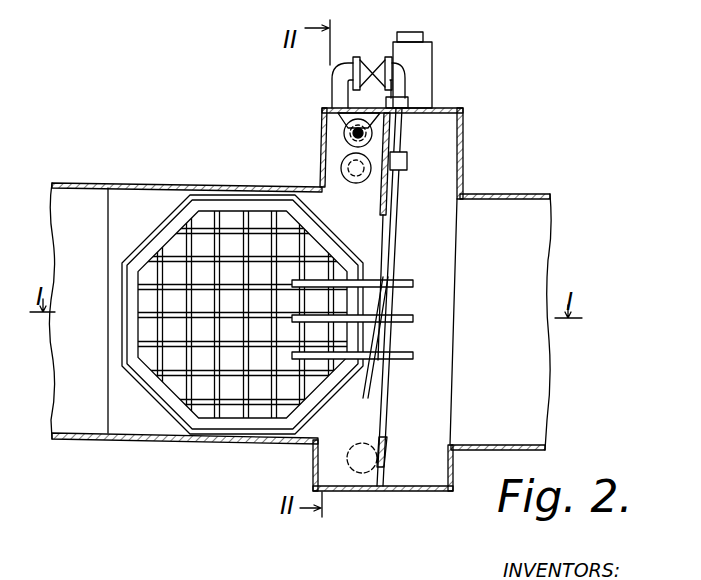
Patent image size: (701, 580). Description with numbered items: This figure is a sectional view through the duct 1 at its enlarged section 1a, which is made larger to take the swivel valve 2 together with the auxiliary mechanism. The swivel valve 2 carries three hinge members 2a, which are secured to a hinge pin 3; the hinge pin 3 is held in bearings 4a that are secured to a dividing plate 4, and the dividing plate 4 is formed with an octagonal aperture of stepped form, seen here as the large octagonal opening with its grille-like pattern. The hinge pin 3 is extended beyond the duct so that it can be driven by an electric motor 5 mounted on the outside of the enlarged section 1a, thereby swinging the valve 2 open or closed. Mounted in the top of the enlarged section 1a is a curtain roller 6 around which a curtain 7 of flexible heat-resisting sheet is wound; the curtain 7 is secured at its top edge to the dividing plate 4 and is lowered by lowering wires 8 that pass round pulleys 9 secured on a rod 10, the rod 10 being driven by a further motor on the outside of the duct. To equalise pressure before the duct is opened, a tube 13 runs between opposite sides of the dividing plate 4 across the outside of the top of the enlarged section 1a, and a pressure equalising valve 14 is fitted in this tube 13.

The duct 1 is at (182, 440).
The enlarged section 1a is at (463, 128).
The swivel valve 2 is at (161, 402).
The hinge members 2a is at (362, 351).
The hinge pin 3 is at (401, 236).
The dividing plate 4 is at (389, 448).
The bearings 4a is at (407, 160).
The electric motor 5 is at (417, 52).
The curtain roller 6 is at (348, 185).
The curtain 7 is at (382, 178).
The lowering wires 8 is at (344, 150).
The pulleys 9 is at (352, 130).
The rod 10 is at (388, 117).
The tube 13 is at (397, 72).
The pressure equalising valve 14 is at (368, 63).